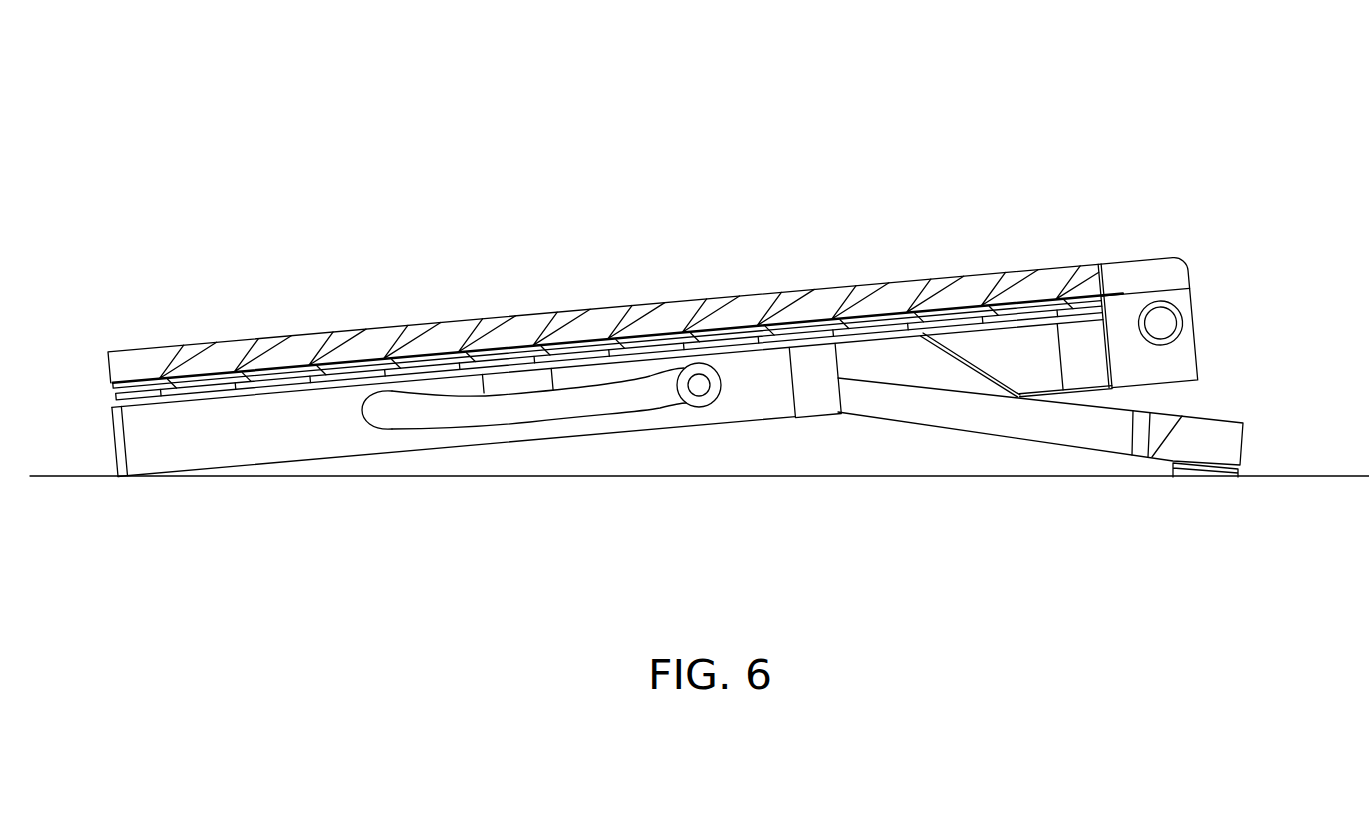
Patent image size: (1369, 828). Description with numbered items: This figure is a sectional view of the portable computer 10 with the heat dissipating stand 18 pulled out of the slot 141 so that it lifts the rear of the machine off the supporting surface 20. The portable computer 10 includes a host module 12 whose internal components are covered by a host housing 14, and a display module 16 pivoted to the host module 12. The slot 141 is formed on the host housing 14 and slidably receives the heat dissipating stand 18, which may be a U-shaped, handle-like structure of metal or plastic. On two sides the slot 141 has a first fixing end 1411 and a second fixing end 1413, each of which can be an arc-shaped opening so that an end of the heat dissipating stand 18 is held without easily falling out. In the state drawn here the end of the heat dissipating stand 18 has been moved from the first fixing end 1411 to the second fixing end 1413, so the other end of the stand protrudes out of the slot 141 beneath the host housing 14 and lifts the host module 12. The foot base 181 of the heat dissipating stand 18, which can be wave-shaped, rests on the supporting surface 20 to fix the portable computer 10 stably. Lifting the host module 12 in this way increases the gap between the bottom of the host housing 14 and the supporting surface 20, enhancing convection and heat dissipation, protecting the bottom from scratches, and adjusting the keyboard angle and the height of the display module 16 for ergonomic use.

The portable computer 10 is at (1080, 115).
The host module 12 is at (1223, 318).
The host housing 14 is at (232, 446).
The slot 141 is at (541, 488).
The first fixing end 1411 is at (391, 442).
The second fixing end 1413 is at (686, 422).
The display module 16 is at (1083, 280).
The heat dissipating stand 18 is at (1046, 450).
The foot base 181 is at (1194, 478).
The supporting surface 20 is at (1312, 475).